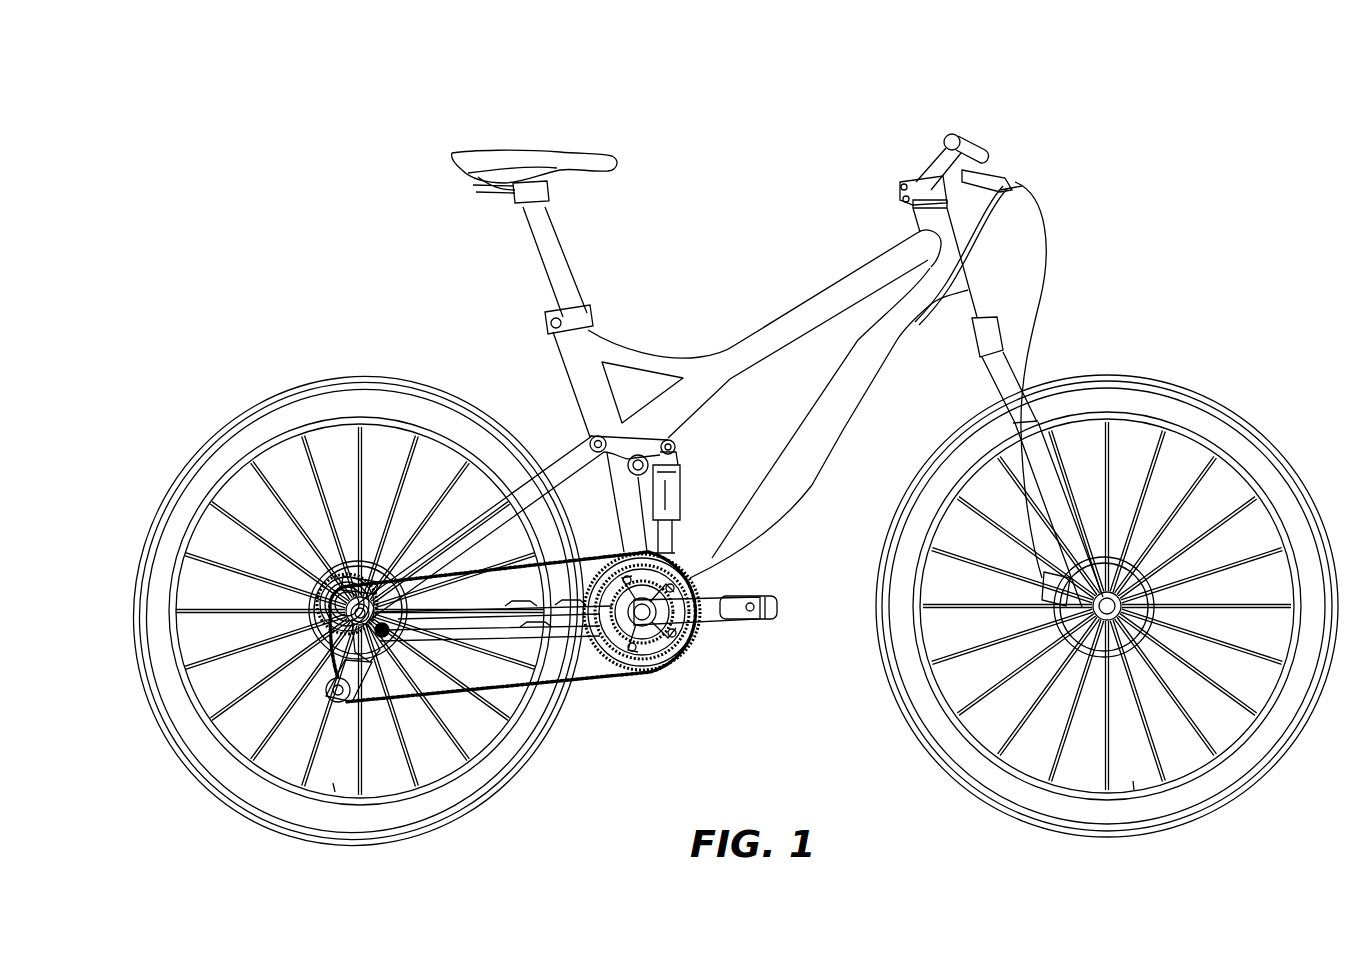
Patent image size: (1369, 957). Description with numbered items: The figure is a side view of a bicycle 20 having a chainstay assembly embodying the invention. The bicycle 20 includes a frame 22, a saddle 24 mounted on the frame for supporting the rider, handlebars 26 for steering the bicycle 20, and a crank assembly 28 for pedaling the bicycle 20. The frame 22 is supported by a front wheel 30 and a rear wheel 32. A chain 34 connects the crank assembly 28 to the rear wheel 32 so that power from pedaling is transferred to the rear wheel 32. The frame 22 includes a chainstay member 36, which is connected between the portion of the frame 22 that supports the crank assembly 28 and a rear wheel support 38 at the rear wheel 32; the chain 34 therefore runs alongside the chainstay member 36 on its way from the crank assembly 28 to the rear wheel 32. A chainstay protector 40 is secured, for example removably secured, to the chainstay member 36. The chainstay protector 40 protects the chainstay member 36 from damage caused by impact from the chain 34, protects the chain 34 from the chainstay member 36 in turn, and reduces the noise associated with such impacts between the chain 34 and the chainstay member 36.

The bicycle 20 is at (314, 154).
The frame 22 is at (784, 317).
The saddle 24 is at (522, 160).
The handlebars 26 is at (957, 132).
The crank assembly 28 is at (712, 635).
The front wheel 30 is at (1184, 382).
The rear wheel 32 is at (226, 432).
The chain 34 is at (605, 677).
The chainstay member 36 is at (573, 693).
The rear wheel support 38 is at (302, 610).
The chainstay protector 40 is at (566, 608).